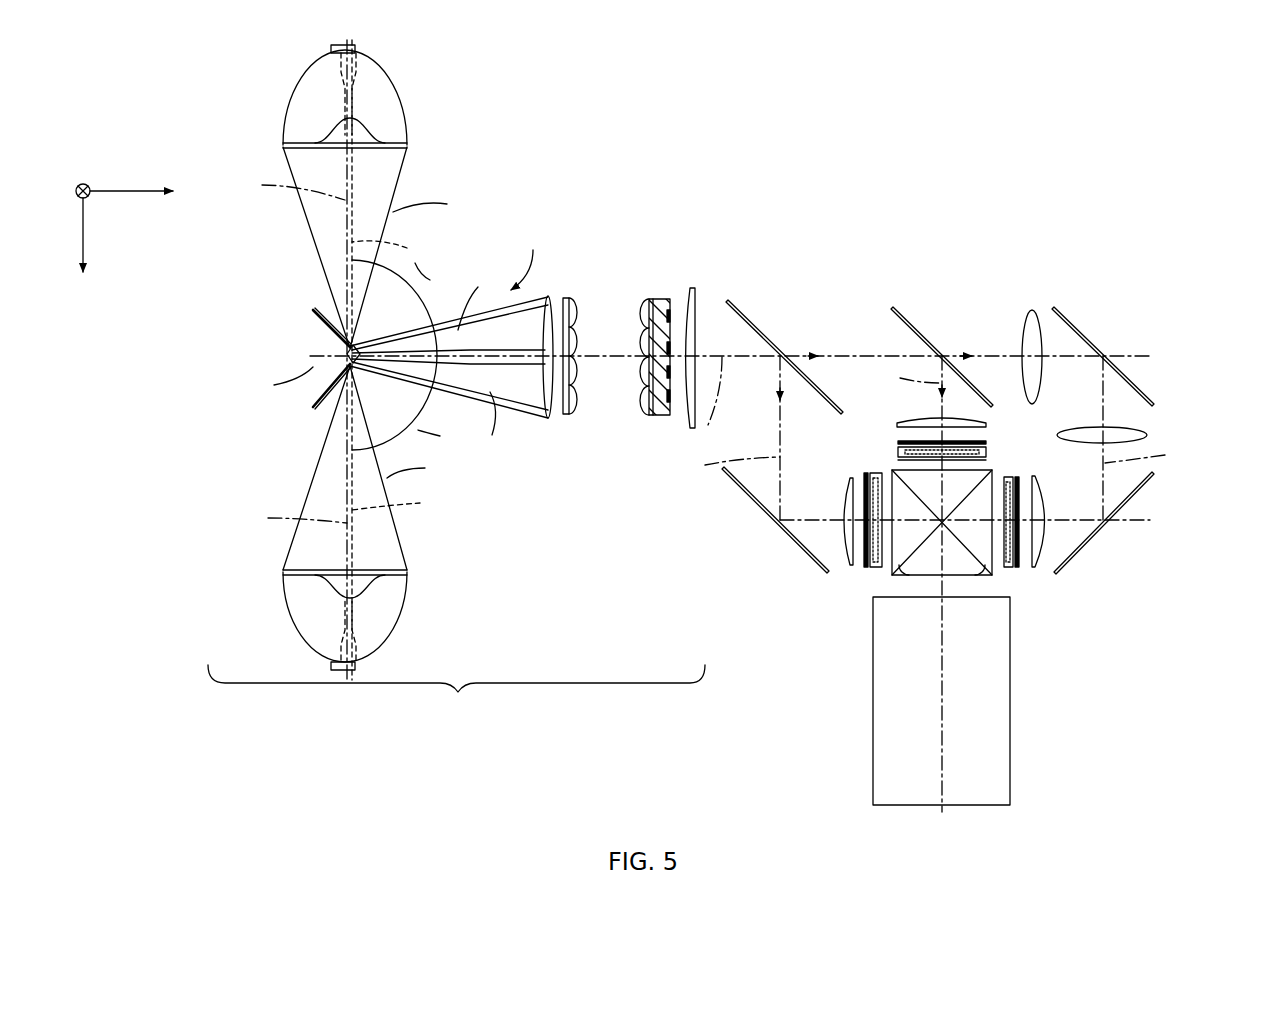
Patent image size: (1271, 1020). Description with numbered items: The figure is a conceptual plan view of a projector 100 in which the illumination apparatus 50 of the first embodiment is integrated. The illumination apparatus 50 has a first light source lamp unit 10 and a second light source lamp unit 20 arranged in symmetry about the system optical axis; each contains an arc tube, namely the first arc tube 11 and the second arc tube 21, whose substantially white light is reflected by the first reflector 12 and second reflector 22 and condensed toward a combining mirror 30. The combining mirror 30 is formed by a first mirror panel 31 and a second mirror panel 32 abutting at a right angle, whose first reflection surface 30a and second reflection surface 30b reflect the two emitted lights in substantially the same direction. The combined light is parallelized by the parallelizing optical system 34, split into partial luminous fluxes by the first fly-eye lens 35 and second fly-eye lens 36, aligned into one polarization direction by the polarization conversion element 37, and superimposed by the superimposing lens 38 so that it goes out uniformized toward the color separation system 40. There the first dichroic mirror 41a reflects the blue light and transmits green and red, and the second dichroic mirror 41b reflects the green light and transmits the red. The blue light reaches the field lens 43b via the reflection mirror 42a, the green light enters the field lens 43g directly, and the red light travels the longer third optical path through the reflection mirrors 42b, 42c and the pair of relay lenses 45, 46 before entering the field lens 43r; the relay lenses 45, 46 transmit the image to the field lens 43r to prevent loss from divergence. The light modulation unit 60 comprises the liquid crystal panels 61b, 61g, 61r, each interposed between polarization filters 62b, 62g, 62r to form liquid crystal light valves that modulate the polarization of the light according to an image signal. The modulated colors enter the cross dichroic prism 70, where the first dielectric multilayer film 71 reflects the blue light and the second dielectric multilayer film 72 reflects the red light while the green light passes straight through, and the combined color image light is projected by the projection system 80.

The projector 100 is at (1147, 123).
The first light source lamp unit 10 is at (421, 170).
The first arc tube 11 is at (335, 90).
The first reflector 12 is at (283, 132).
The second light source lamp unit 20 is at (416, 541).
The second arc tube 21 is at (332, 630).
The second reflector 22 is at (282, 587).
The combining mirror 30 is at (297, 349).
The first reflection surface 30a is at (328, 307).
The second reflection surface 30b is at (324, 412).
The first mirror panel 31 is at (318, 315).
The second mirror panel 32 is at (316, 400).
The parallelizing optical system 34 is at (549, 296).
The first fly-eye lens 35 is at (570, 416).
The second fly-eye lens 36 is at (642, 302).
The polarization conversion element 37 is at (660, 298).
The superimposing lens 38 is at (692, 288).
The color separation system 40 is at (871, 280).
The first dichroic mirror 41a is at (770, 325).
The second dichroic mirror 41b is at (906, 318).
The reflection mirror 42a is at (748, 490).
The reflection mirror 42b is at (1095, 342).
The reflection mirror 42c is at (1132, 500).
The field lens 43g is at (897, 423).
The field lens 43b is at (846, 540).
The field lens 43r is at (1052, 535).
The first relay lens 45 is at (1036, 308).
The relay lens 46 is at (1150, 433).
The illumination apparatus 50 is at (455, 386).
The light modulation unit 60 is at (855, 551).
The liquid crystal panel 61g is at (898, 452).
The liquid crystal panel 61b is at (874, 568).
The liquid crystal panel 61r is at (1010, 532).
The polarization filter 62g is at (988, 442).
The polarization filter 62b is at (866, 480).
The polarization filter 62r is at (1018, 475).
The cross dichroic prism 70 is at (968, 586).
The first dielectric multilayer film 71 is at (987, 575).
The second dielectric multilayer film 72 is at (905, 575).
The projection system 80 is at (878, 724).